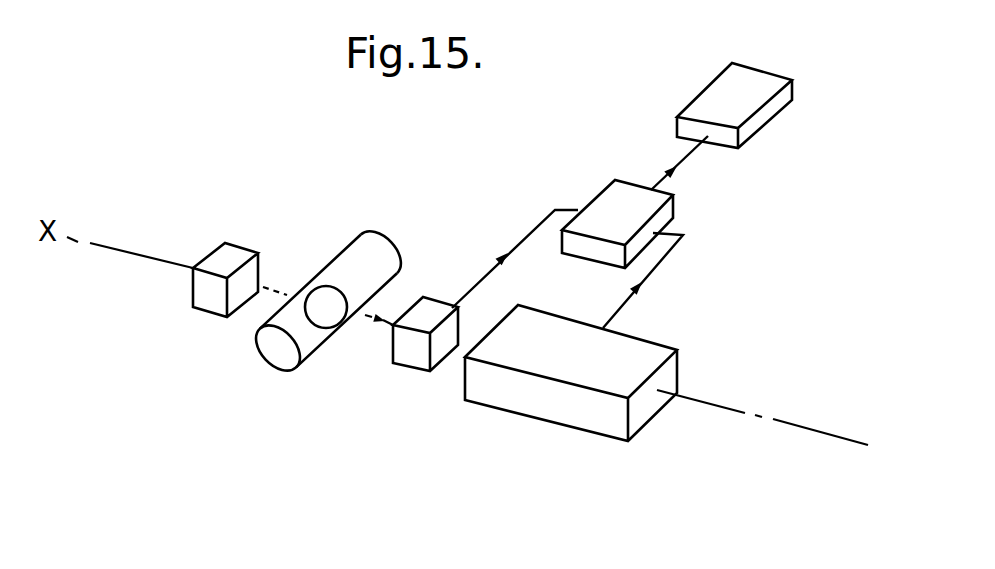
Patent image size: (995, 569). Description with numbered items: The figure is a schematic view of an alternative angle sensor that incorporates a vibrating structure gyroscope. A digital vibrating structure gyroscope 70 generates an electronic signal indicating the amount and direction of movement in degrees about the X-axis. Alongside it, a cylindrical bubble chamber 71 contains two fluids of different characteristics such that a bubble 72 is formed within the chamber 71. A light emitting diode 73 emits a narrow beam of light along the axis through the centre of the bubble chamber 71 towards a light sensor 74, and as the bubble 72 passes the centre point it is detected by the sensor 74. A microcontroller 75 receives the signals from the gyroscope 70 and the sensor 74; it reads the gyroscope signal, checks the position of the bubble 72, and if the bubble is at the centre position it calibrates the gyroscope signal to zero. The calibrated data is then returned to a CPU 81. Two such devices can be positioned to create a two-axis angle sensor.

The control and evaluation unit 70 is at (535, 412).
The aperture 71 is at (280, 368).
The cylindrical housing 72 is at (316, 323).
The light source unit 73 is at (225, 243).
The detector unit 74 is at (410, 360).
The processing unit 75 is at (610, 197).
The display unit 81 is at (707, 98).